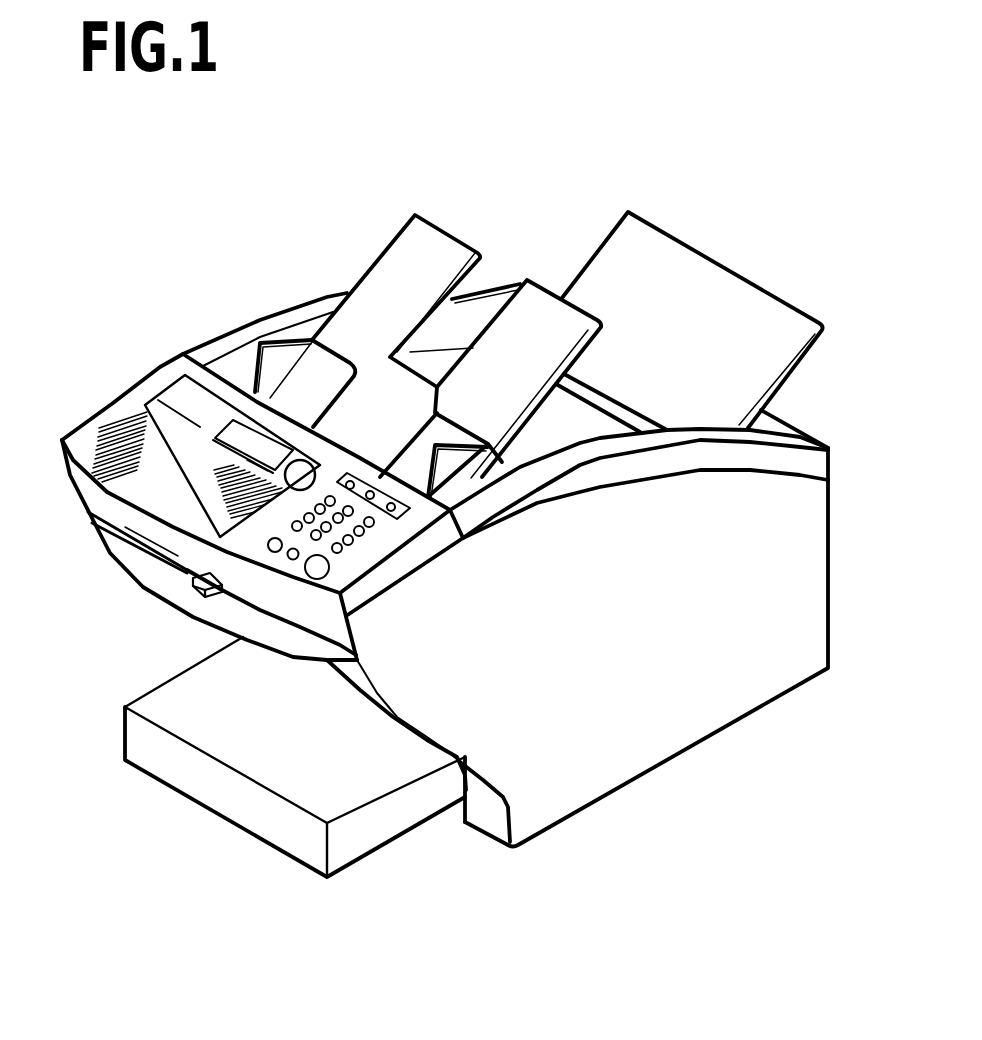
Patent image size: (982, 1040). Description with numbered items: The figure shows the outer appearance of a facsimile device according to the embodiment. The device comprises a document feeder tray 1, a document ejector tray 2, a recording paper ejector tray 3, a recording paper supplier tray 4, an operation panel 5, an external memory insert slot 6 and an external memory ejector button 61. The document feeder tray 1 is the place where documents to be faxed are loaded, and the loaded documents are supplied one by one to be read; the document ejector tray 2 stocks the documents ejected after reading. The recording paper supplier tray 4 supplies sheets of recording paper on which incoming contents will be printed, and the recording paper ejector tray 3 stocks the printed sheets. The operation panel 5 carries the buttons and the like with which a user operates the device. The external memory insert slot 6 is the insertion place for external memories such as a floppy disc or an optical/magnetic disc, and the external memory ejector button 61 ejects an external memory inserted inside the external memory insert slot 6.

The document feeder tray 1 is at (320, 380).
The document ejector tray 2 is at (540, 320).
The recording paper ejector tray 3 is at (692, 273).
The recording paper supplier tray 4 is at (285, 780).
The operation panel 5 is at (113, 407).
The external memory insert slot 6 is at (150, 547).
The external memory ejector button 61 is at (193, 583).